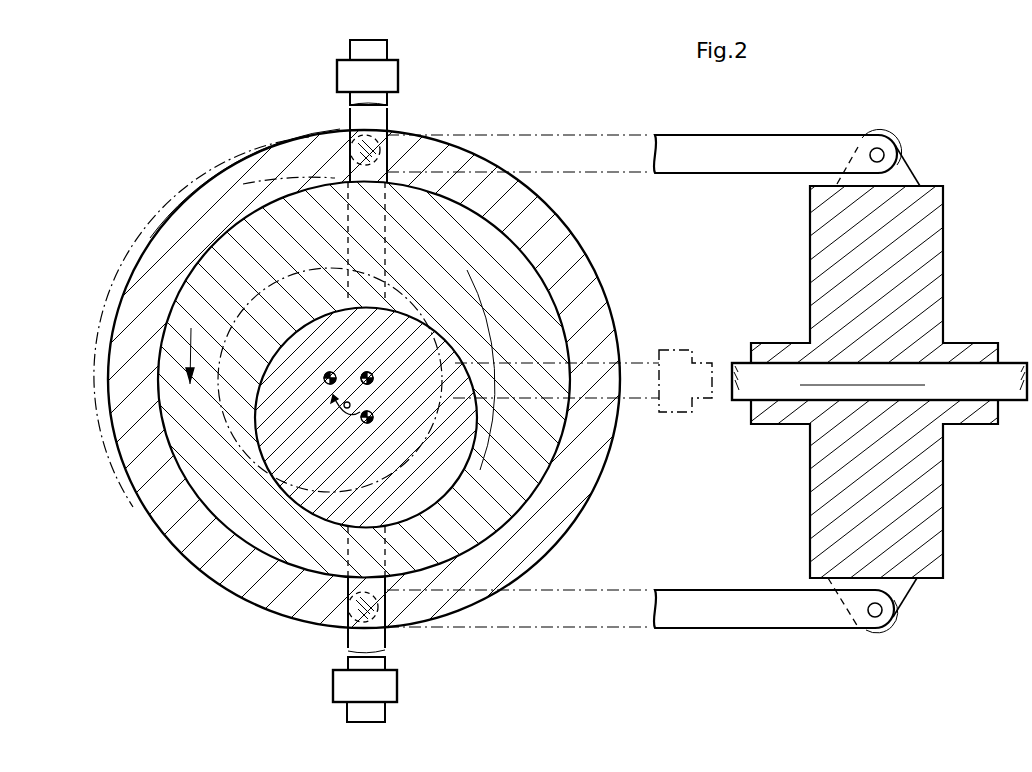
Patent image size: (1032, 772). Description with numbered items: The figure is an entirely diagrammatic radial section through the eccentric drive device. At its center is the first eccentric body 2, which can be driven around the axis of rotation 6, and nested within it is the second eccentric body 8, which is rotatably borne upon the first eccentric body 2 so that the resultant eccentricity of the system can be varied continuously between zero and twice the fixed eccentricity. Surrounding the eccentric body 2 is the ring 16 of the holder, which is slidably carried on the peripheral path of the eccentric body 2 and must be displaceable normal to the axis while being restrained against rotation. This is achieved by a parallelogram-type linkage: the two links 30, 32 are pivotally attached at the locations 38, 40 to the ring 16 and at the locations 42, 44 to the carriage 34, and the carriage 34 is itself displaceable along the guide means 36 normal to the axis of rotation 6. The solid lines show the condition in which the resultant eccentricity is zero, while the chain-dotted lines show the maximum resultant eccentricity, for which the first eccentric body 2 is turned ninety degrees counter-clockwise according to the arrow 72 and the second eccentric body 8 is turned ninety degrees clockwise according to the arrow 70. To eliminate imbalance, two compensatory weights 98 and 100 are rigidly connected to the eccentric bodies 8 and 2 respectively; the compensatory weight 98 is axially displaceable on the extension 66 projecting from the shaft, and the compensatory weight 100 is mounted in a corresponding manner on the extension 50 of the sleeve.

The eccentric body 2 is at (555, 440).
The axis of rotation 6 is at (373, 377).
The second eccentric body 8 is at (417, 497).
The ring 16 is at (560, 530).
The link 30 is at (598, 622).
The link 32 is at (592, 136).
The carriage 34 is at (932, 512).
The guide means 36 is at (747, 388).
The pivot location 38 is at (378, 618).
The pivot location 40 is at (400, 143).
The pivot location 42 is at (888, 617).
The pivot location 44 is at (884, 153).
The extension of the sleeve 50 is at (347, 643).
The extension of the shaft 66 is at (353, 122).
The arrow 70 is at (347, 408).
The arrow 72 is at (193, 340).
The compensatory weight 98 is at (393, 80).
The compensatory weight 100 is at (397, 687).